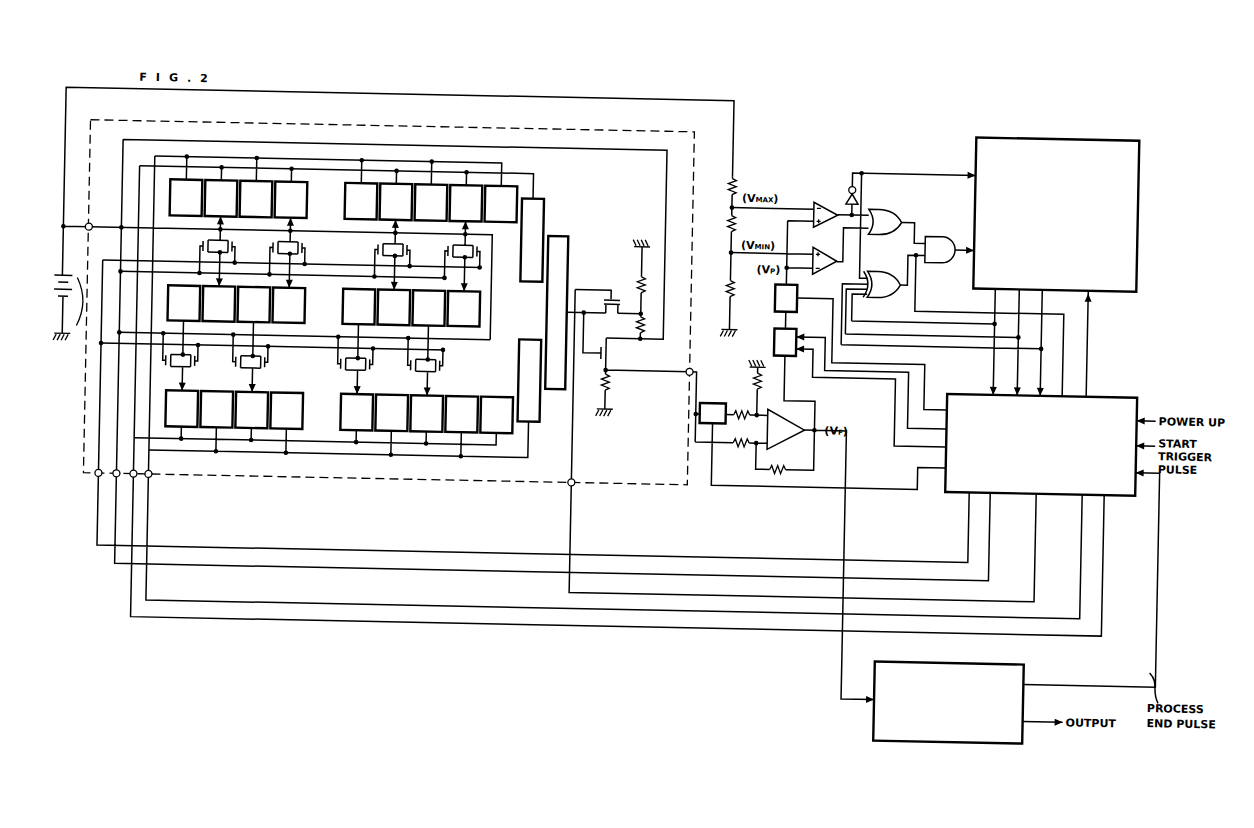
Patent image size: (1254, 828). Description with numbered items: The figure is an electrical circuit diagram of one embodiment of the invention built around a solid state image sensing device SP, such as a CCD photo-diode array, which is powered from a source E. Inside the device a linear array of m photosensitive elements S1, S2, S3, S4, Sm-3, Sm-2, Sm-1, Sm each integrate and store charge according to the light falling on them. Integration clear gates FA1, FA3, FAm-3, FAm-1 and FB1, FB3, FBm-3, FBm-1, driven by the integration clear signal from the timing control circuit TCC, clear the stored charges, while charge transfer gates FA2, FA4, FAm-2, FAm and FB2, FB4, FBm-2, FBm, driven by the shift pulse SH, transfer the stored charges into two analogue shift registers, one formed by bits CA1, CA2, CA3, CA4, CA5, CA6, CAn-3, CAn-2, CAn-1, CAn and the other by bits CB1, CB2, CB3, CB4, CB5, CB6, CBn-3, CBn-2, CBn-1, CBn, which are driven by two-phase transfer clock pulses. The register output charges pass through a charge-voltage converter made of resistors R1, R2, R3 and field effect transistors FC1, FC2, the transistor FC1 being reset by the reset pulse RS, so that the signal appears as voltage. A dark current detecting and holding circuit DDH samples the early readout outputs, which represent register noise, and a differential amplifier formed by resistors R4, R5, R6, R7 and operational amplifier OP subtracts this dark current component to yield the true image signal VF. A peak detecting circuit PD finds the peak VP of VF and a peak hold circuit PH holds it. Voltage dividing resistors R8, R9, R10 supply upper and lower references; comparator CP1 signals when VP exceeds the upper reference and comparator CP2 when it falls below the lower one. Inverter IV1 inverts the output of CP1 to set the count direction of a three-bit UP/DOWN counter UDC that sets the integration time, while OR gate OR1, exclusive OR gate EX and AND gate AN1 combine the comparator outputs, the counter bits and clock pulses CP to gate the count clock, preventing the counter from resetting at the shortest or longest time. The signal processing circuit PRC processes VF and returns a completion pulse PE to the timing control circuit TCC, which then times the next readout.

The solid state image sensing device SP is at (635, 191).
The battery / power source E is at (68, 318).
The analogue shift register bit CAn is at (186, 197).
The analogue shift register bit CAn-1 is at (221, 198).
The analogue shift register bit CAn-2 is at (256, 199).
The analogue shift register bit CAn-3 is at (291, 199).
The analogue shift register bit CA6 is at (361, 201).
The analogue shift register bit CA5 is at (396, 202).
The analogue shift register bit CA4 is at (431, 202).
The analogue shift register bit CA3 is at (466, 203).
The analogue shift register bit CA2 is at (501, 204).
The analogue shift register bit CA1 is at (532, 239).
The photosensitive element Sm is at (184, 303).
The photosensitive element Sm-1 is at (219, 304).
The photosensitive element Sm-2 is at (253, 305).
The photosensitive element Sm-3 is at (288, 305).
The photosensitive element S4 is at (358, 307).
The photosensitive element S3 is at (393, 308).
The photosensitive element S2 is at (428, 308).
The photosensitive element S1 is at (463, 309).
The analogue shift register bit CBn is at (181, 408).
The analogue shift register bit CBn-1 is at (216, 409).
The analogue shift register bit CBn-2 is at (251, 410).
The analogue shift register bit CBn-3 is at (286, 410).
The analogue shift register bit CB6 is at (356, 412).
The analogue shift register bit CB5 is at (391, 413).
The analogue shift register bit CB4 is at (426, 413).
The analogue shift register bit CB3 is at (461, 414).
The analogue shift register bit CB2 is at (496, 415).
The analogue shift register bit CB1 is at (530, 380).
The charge transfer gate FAm is at (200, 252).
The integration clear gate FAm-1 is at (232, 257).
The charge transfer gate FAm-2 is at (270, 255).
The integration clear gate FAm-3 is at (302, 255).
The charge transfer gate FA4 is at (375, 254).
The integration clear gate FA3 is at (407, 256).
The charge transfer gate FA2 is at (445, 254).
The integration clear gate FA1 is at (478, 262).
The charge transfer gate FBm is at (166, 375).
The integration clear gate FBm-1 is at (197, 373).
The charge transfer gate FBm-2 is at (239, 377).
The integration clear gate FBm-3 is at (268, 373).
The charge transfer gate FB4 is at (340, 376).
The integration clear gate FB3 is at (372, 374).
The charge transfer gate FB2 is at (412, 376).
The integration clear gate FB1 is at (443, 368).
The field effect transistor FC1 is at (609, 298).
The field effect transistor FC2 is at (600, 362).
The resistor R1 is at (614, 385).
The resistor R2 is at (649, 285).
The resistor R3 is at (648, 326).
The resistor R4 is at (742, 408).
The resistor R5 is at (750, 383).
The resistor R6 is at (741, 451).
The resistor R7 is at (781, 464).
The voltage dividing resistor R8 is at (725, 191).
The voltage dividing resistor R9 is at (724, 229).
The voltage dividing resistor R10 is at (717, 291).
The comparator CP1 is at (824, 201).
The comparator CP2 is at (824, 254).
The inverter IV1 is at (854, 187).
The OR gate OR1 is at (891, 222).
The exclusive OR gate EX is at (890, 285).
The AND gate AN1 is at (946, 249).
The UP/DOWN counter UDC is at (1116, 219).
The timing control circuit TCC is at (1060, 446).
The signal processing circuit PRC is at (980, 701).
The peak hold circuit PH is at (793, 302).
The peak detecting circuit PD is at (793, 346).
The dark current detecting and holding circuit DDH is at (713, 413).
The operational amplifier OP is at (792, 433).